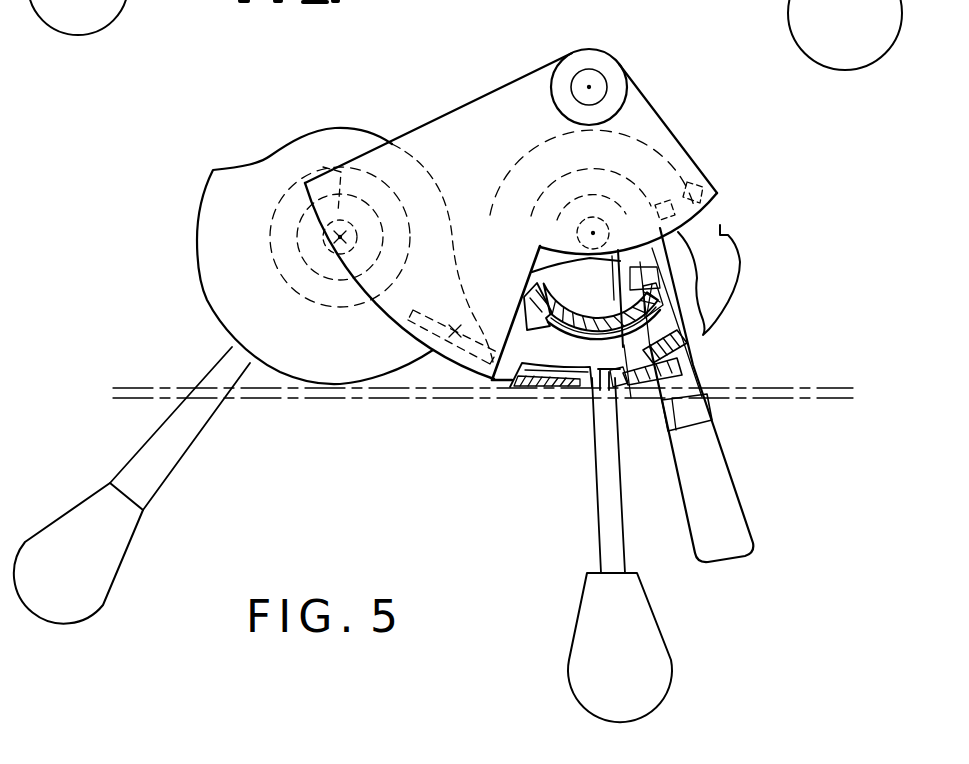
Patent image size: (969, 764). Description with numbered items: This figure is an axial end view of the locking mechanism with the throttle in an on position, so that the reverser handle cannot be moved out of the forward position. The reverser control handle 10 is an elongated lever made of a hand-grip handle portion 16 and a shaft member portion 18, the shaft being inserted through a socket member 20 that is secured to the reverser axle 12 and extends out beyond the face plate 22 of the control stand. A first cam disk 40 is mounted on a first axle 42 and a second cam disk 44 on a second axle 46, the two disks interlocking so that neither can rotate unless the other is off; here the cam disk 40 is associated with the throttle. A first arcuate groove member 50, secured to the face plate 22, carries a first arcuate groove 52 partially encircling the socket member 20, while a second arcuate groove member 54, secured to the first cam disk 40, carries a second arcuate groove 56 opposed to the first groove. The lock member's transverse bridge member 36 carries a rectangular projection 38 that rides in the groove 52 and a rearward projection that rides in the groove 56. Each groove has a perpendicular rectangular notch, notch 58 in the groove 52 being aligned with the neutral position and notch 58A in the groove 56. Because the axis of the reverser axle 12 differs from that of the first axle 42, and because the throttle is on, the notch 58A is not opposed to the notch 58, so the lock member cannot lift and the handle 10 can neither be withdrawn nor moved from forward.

The reverser control handle 10 is at (765, 485).
The reverser axle 12 is at (580, 78).
The hand-grip handle portion 16 is at (740, 523).
The shaft member portion 18 is at (675, 300).
The socket member 20 is at (713, 407).
The face plate 22 is at (370, 393).
The transverse bridge member 36 is at (692, 343).
The rectangular projection 38 is at (660, 327).
The first cam disk 40 is at (720, 228).
The first axle 42 is at (563, 220).
The second cam disk 44 is at (213, 208).
The second axle 46 is at (370, 170).
The first arcuate groove member 50 is at (533, 390).
The first arcuate groove 52 is at (517, 373).
The second arcuate groove member 54 is at (612, 280).
The second arcuate groove 56 is at (630, 398).
The rectangular notch 58 is at (600, 395).
The rectangular notch 58A is at (520, 312).